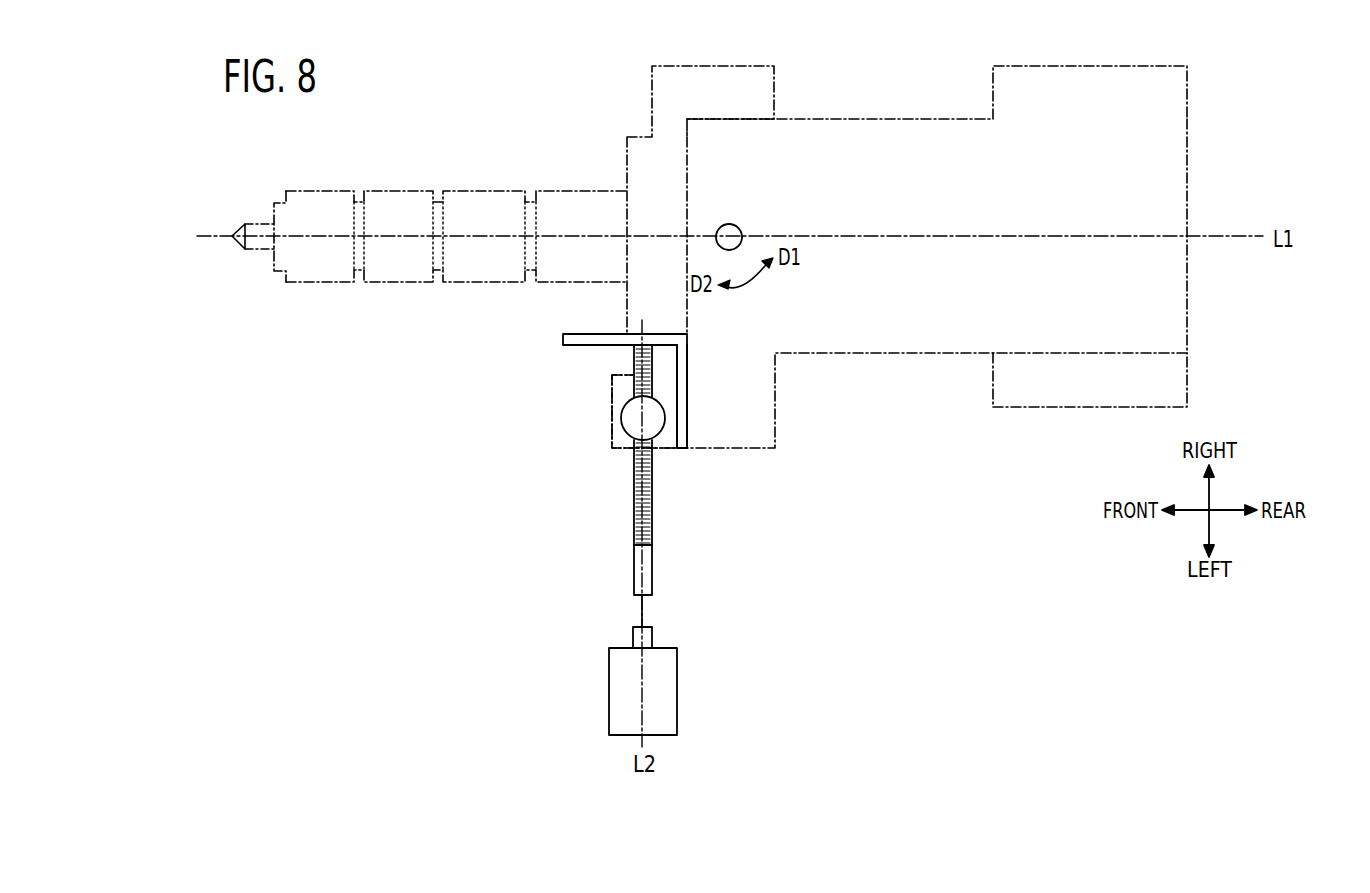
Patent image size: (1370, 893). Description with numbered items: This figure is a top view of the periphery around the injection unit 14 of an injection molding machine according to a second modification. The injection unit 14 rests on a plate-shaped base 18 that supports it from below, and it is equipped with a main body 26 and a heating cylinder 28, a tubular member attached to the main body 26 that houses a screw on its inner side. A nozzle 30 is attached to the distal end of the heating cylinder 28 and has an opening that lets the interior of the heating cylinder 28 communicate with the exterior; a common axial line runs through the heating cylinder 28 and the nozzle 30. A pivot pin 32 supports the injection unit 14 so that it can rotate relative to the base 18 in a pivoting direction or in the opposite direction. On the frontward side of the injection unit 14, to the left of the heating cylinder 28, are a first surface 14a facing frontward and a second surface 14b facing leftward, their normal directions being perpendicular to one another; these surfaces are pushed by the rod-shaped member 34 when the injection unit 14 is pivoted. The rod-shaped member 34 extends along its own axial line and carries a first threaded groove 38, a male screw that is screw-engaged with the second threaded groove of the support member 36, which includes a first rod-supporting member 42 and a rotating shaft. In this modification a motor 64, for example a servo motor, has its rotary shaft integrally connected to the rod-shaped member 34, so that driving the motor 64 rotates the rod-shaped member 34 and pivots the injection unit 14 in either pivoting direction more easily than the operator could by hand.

The injection unit 14 is at (833, 73).
The first surface 14a is at (680, 362).
The second surface 14b is at (597, 334).
The base 18 is at (1070, 390).
The main body 26 is at (1173, 175).
The heating cylinder 28 is at (300, 191).
The nozzle 30 is at (260, 222).
The pivot pin 32 is at (730, 224).
The rod-shaped member 34 is at (652, 567).
The support member 36 is at (662, 398).
The first threaded groove 38 is at (652, 474).
The first rod-supporting member 42 is at (658, 417).
The motor 64 is at (677, 682).